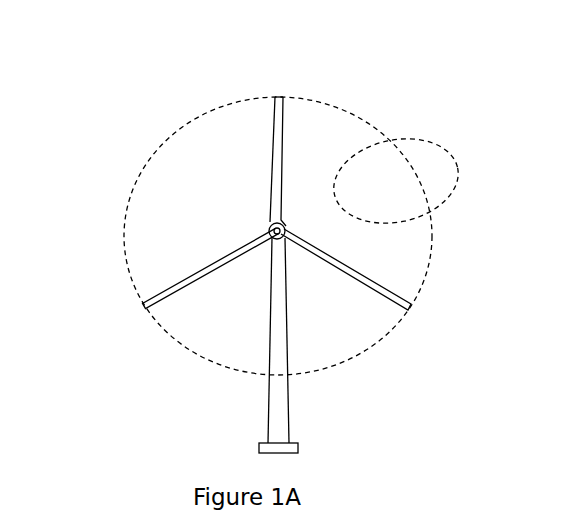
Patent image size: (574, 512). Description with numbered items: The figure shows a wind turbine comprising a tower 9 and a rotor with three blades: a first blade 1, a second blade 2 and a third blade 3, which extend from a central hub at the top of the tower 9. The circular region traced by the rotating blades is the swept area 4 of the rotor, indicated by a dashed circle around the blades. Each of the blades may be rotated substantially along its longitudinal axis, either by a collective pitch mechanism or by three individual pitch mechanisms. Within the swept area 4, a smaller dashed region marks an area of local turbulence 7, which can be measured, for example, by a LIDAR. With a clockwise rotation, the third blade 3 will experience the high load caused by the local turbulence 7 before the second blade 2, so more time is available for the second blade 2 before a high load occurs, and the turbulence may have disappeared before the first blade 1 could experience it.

The first blade 1 is at (363, 273).
The second blade 2 is at (185, 282).
The third blade 3 is at (283, 150).
The swept area 4 is at (201, 154).
The local turbulence 7 is at (390, 182).
The tower 9 is at (283, 408).